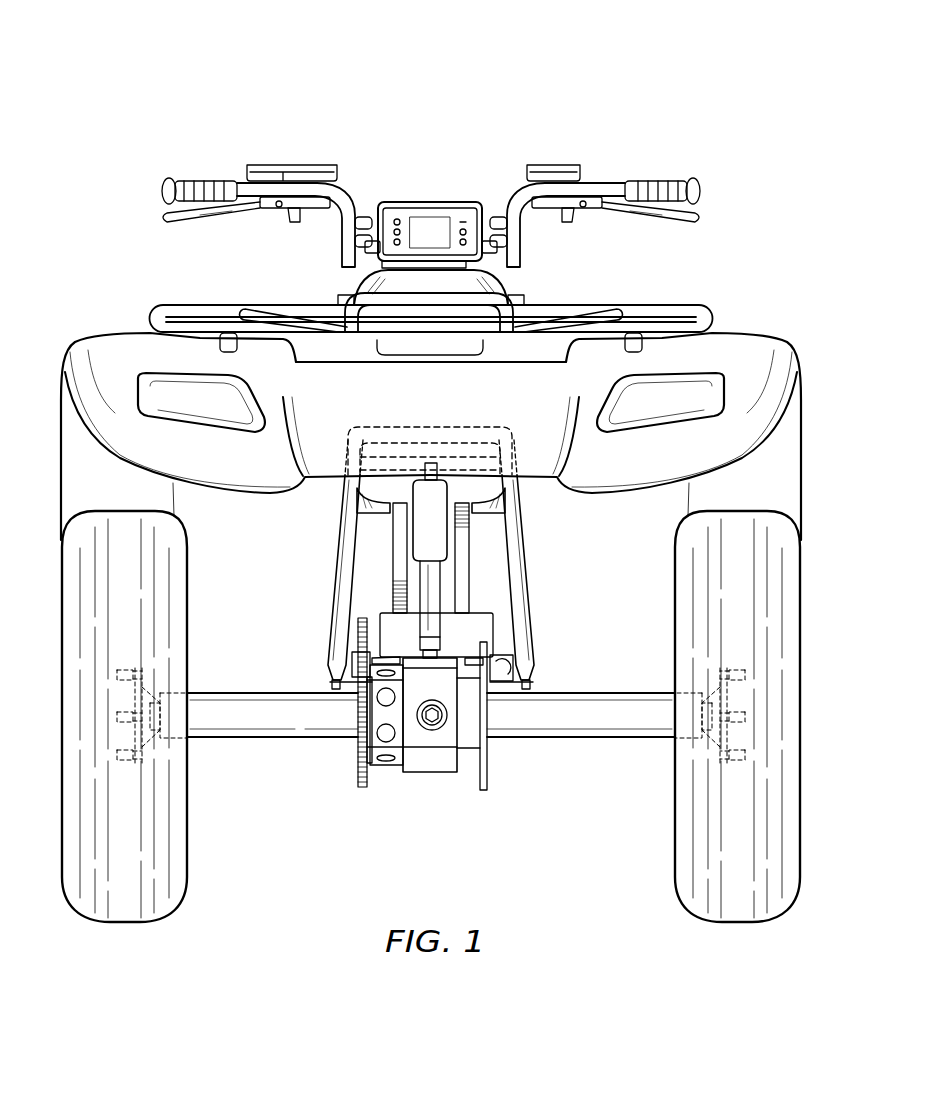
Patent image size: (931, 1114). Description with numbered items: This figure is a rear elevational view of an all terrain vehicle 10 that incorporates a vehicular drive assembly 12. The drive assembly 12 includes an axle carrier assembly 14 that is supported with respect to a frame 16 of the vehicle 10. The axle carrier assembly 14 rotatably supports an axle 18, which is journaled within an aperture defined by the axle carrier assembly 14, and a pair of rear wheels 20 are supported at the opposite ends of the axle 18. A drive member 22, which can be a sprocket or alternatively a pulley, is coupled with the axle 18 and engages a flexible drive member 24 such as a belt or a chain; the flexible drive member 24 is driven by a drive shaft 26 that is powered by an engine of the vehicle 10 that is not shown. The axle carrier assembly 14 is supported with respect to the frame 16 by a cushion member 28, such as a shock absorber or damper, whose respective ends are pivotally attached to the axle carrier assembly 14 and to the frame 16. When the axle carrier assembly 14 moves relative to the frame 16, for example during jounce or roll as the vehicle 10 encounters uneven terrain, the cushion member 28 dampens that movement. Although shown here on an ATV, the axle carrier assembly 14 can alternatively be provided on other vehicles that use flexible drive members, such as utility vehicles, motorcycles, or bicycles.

The vehicle 10 is at (310, 61).
The vehicular drive assembly 12 is at (431, 673).
The axle carrier assembly 14 is at (427, 785).
The frame 16 is at (334, 538).
The axle 18 is at (252, 738).
The rear wheels 20 is at (118, 922).
The drive member 22 is at (352, 765).
The flexible drive member 24 is at (358, 619).
The drive shaft 26 is at (379, 633).
The cushion member 28 is at (433, 542).